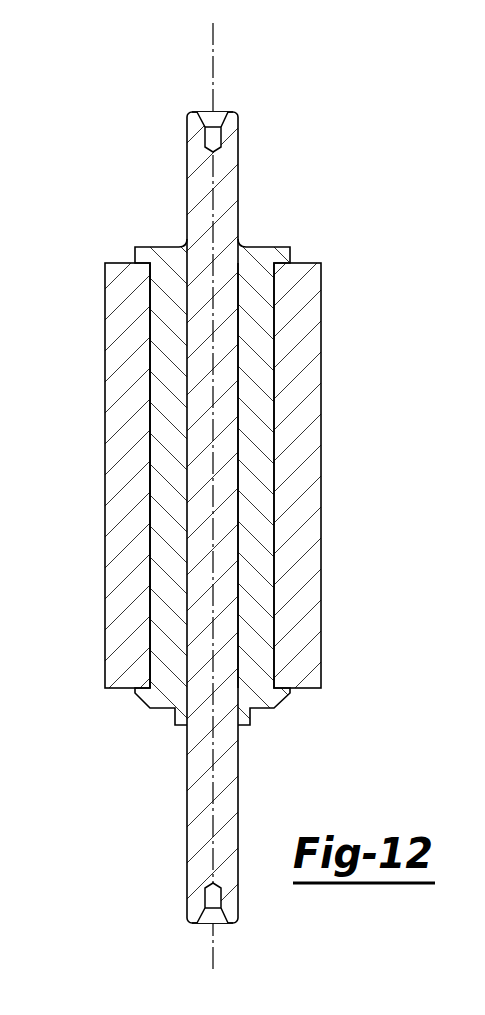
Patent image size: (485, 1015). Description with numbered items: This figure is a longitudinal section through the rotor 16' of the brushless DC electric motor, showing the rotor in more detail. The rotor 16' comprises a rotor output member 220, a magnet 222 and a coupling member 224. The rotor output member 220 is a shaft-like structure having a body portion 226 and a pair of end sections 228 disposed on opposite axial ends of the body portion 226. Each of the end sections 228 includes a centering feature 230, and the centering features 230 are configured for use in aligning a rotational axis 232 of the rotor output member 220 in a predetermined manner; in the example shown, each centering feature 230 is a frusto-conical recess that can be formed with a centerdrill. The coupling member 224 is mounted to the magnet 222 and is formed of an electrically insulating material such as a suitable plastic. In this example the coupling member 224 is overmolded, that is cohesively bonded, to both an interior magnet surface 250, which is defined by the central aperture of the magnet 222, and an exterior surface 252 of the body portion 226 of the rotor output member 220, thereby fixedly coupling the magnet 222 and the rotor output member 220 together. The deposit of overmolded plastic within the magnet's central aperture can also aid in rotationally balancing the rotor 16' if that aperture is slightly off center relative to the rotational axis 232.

The rotor 16' is at (235, 499).
The rotor output member 220 is at (228, 768).
The magnet 222 is at (322, 533).
The coupling member 224 is at (248, 388).
The body portion 226 is at (205, 540).
The end sections 228 is at (187, 154).
The centering feature 230 is at (226, 109).
The rotational axis 232 is at (213, 27).
The interior magnet surface 250 is at (150, 353).
The exterior surface 252 is at (238, 298).